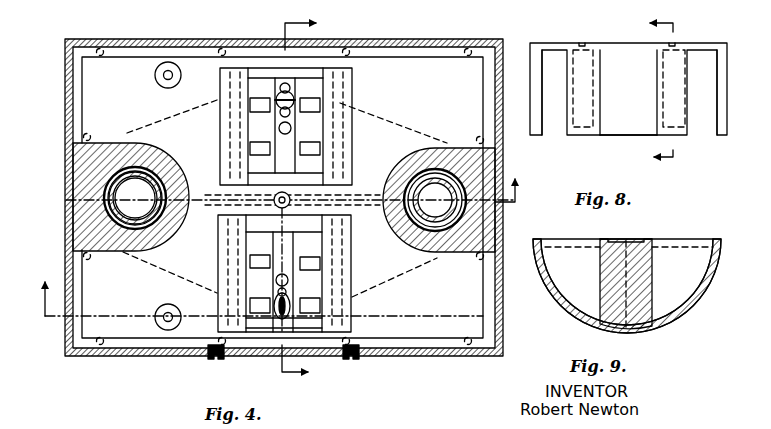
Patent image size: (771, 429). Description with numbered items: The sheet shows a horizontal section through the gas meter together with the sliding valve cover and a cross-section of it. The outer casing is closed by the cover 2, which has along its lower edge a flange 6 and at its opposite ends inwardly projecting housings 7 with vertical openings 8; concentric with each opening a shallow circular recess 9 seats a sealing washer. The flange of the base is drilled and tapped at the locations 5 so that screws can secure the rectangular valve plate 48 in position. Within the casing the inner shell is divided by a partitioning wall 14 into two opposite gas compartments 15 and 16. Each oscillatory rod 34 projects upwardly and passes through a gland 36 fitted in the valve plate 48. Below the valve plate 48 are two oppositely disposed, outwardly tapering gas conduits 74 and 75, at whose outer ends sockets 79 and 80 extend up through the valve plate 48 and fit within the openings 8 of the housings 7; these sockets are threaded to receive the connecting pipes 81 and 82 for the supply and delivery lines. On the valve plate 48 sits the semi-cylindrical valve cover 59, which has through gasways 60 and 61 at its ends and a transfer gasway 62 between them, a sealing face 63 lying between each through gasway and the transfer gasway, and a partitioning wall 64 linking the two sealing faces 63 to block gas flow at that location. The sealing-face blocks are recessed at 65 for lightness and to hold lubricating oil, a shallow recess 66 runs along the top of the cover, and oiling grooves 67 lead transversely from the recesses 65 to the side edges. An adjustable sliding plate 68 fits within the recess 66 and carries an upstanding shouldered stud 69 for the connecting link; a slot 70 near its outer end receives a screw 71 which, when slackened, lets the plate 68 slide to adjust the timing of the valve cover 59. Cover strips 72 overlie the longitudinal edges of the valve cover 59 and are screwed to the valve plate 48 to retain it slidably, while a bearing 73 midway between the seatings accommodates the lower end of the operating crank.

In FIG. 4, the cover 2 is at (284, 184).
In FIG. 4, the tapped holes 5 is at (283, 164).
In FIG. 4, the flange 6 is at (237, 199).
In FIG. 4, the housings 7 is at (131, 183).
In FIG. 4, the vertical openings 8 is at (135, 173).
In FIG. 8, the circular recess 9 is at (653, 90).
In FIG. 4, the partitioning wall 14 is at (157, 188).
In FIG. 4, the gas compartment 15 is at (412, 65).
In FIG. 4, the gas compartment 16 is at (436, 348).
In FIG. 4, the oscillatory rod 34 is at (175, 201).
In FIG. 4, the gland 36 is at (150, 75).
In FIG. 4, the valve plate 48 is at (282, 197).
In FIG. 4, the valve cover 59 is at (288, 200).
In FIG. 8, the valve cover 59 is at (624, 73).
In FIG. 8, the through gasway 60 is at (553, 104).
In FIG. 8, the through gasway 61 is at (708, 104).
In FIG. 8, the transfer gasway 62 is at (620, 140).
In FIG. 8, the sealing face 63 is at (648, 69).
In FIG. 9, the sealing face 63 is at (627, 286).
In FIG. 8, the partitioning wall 64 is at (628, 92).
In FIG. 4, the recess 65 is at (315, 282).
In FIG. 9, the recess 65 is at (629, 259).
In FIG. 4, the shallow recess 66 is at (305, 272).
In FIG. 9, the shallow recess 66 is at (626, 269).
In FIG. 8, the oiling grooves 67 is at (618, 29).
In FIG. 9, the oiling grooves 67 is at (593, 225).
In FIG. 4, the adjustable sliding plate 68 is at (280, 281).
In FIG. 4, the shouldered stud 69 is at (330, 272).
In FIG. 4, the slot 70 is at (328, 329).
In FIG. 4, the screw 71 is at (328, 310).
In FIG. 4, the cover strips 72 is at (306, 126).
In FIG. 4, the bearing 73 is at (315, 133).
In FIG. 4, the gas conduit 74 is at (172, 116).
In FIG. 4, the gas conduit 75 is at (393, 118).
In FIG. 4, the socket 79 is at (149, 180).
In FIG. 4, the socket 80 is at (439, 180).
In FIG. 4, the connecting pipe 81 is at (161, 206).
In FIG. 4, the connecting pipe 82 is at (435, 229).